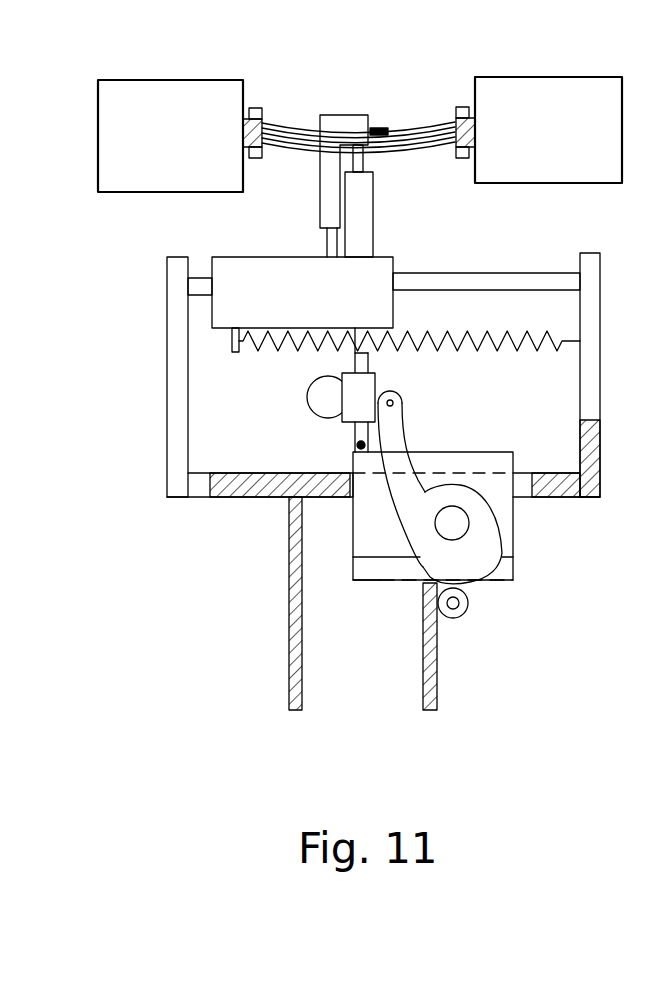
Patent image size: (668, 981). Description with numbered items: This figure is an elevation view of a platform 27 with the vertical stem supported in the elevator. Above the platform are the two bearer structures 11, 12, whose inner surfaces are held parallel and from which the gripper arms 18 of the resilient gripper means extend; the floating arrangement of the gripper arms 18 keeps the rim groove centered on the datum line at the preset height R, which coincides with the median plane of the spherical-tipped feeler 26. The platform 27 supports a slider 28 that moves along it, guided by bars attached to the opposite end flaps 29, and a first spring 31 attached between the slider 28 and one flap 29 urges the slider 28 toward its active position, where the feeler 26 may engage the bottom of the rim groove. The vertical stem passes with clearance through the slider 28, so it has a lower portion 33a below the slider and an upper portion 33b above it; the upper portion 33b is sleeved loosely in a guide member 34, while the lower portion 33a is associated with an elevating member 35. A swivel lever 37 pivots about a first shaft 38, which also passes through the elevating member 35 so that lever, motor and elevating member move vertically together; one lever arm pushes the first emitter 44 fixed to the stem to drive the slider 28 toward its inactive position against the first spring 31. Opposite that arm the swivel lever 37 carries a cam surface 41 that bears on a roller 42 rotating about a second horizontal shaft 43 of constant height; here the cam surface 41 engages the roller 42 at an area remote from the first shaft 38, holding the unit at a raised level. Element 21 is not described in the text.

The bearer structure 11 is at (157, 92).
The bearer structure 12 is at (525, 94).
The gripper arms 18 is at (257, 108).
The guide block 21 is at (304, 115).
The feeler 26 is at (392, 128).
The platform 27 is at (198, 485).
The slider 28 is at (244, 265).
The end flaps 29 is at (174, 358).
The first spring 31 is at (477, 335).
The lower portion of the stem 33a is at (378, 358).
The upper portion of the stem 33b is at (366, 160).
The guide member 34 is at (366, 205).
The elevating member 35 is at (503, 492).
The swivel lever 37 is at (487, 550).
The first shaft 38 is at (415, 565).
The cam surface 41 is at (487, 583).
The roller 42 is at (470, 614).
The second horizontal shaft 43 is at (430, 612).
The first emitter 44 is at (322, 404).
The preset height R is at (296, 125).